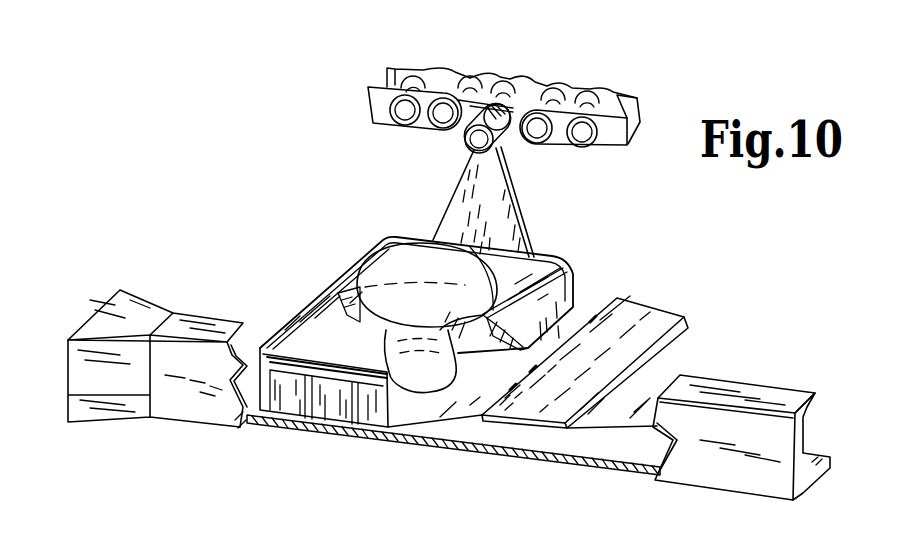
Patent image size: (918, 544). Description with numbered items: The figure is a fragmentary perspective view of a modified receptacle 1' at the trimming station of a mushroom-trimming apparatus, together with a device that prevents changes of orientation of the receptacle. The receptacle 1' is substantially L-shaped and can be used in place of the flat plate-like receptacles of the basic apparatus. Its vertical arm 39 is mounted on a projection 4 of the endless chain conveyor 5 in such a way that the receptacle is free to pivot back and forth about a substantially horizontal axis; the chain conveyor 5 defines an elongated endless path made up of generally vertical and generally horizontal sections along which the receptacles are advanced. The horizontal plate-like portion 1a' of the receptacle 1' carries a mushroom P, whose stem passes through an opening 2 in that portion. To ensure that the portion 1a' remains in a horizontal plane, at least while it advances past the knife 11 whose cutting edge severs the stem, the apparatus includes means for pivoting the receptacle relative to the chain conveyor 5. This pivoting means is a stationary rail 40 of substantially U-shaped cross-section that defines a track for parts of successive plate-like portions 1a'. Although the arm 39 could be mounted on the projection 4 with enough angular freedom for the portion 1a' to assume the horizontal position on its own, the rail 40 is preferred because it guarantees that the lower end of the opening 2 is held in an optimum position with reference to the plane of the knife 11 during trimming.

The chain conveyor 5 is at (518, 72).
The projection 4 is at (478, 141).
The vertical arm 39 is at (462, 196).
The fungi (mushrooms) P is at (472, 272).
The modified receptacle 1' is at (408, 321).
The plate-like portion 1a' is at (525, 327).
The opening 2 is at (340, 313).
The knife 11 is at (647, 312).
The stationary rail 40 is at (189, 405).